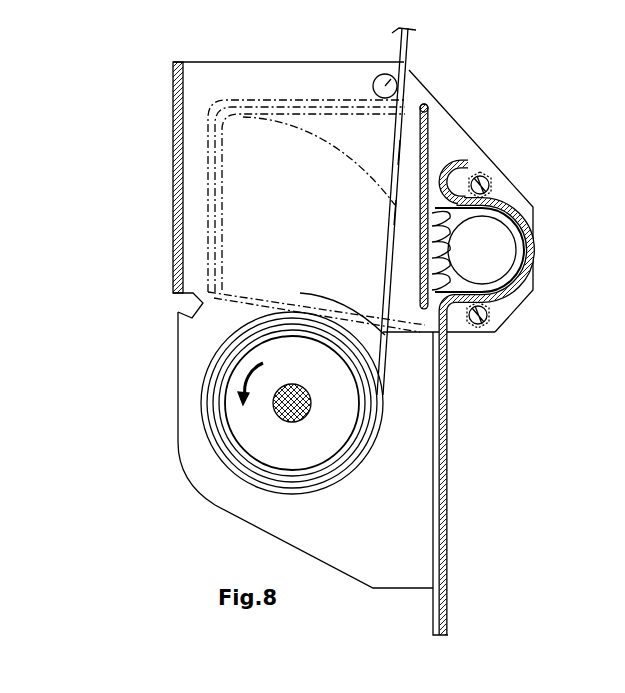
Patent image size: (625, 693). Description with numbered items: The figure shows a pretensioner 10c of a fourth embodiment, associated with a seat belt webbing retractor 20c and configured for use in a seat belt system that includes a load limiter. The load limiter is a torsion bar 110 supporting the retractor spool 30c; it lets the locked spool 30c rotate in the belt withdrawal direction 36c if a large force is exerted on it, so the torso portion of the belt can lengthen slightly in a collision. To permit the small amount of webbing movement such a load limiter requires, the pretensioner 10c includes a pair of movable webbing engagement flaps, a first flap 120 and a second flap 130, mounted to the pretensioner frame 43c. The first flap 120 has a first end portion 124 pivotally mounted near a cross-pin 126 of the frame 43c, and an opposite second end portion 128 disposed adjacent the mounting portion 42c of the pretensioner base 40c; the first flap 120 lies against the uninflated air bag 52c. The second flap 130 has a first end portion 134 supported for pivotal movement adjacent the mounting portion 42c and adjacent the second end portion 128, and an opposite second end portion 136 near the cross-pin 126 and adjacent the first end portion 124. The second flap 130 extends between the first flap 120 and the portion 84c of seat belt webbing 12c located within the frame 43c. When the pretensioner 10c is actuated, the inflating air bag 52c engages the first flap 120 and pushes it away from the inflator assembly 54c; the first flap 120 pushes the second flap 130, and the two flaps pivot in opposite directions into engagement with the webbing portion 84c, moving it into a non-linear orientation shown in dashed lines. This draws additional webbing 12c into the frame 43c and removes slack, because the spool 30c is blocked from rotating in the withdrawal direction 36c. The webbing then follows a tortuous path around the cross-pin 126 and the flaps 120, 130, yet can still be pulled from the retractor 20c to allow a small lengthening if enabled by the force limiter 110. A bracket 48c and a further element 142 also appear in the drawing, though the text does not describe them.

The pretensioner 10c is at (112, 321).
The seat belt webbing 12c is at (422, 53).
The seat belt webbing retractor 20c is at (180, 490).
The retractor spool 30c is at (250, 427).
The belt withdrawal direction 36c is at (266, 364).
The pretensioner base 40c is at (460, 561).
The mounting portion 42c is at (448, 494).
The pretensioner frame 43c is at (161, 131).
The bracket 48c is at (478, 150).
The air bag 52c is at (450, 258).
The inflator assembly 54c is at (490, 223).
The portion of seat belt webbing 84c is at (382, 125).
The torsion bar 110 is at (305, 415).
The first flap 120 is at (442, 135).
The first end portion of first flap 124 is at (428, 120).
The cross-pin 126 is at (382, 80).
The second end portion of first flap 128 is at (490, 318).
The second flap 130 is at (397, 212).
The first end portion of second flap 134 is at (412, 303).
The second end portion of second flap 136 is at (400, 150).
The lower element 142 is at (527, 687).